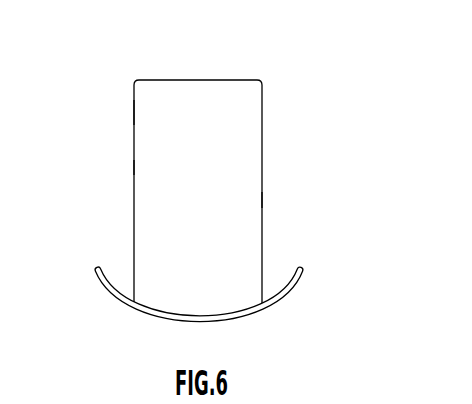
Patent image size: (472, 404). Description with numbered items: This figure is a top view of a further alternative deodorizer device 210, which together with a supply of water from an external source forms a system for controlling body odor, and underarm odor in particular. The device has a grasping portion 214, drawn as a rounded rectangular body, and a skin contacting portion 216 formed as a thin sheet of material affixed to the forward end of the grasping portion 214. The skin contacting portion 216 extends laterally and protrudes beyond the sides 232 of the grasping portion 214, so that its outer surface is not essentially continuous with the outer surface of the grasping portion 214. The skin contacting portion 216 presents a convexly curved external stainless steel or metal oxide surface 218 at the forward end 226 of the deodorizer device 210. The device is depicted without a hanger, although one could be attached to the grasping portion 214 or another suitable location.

The deodorizer device 210 is at (287, 93).
The grasping portion 214 is at (133, 114).
The sides of the grasping portion 232 is at (133, 167).
The skin contacting portion 216 is at (123, 313).
The convexly curved external stainless steel or metal oxide surface 218 is at (285, 313).
The forward end of the deodorizer device 226 is at (240, 323).